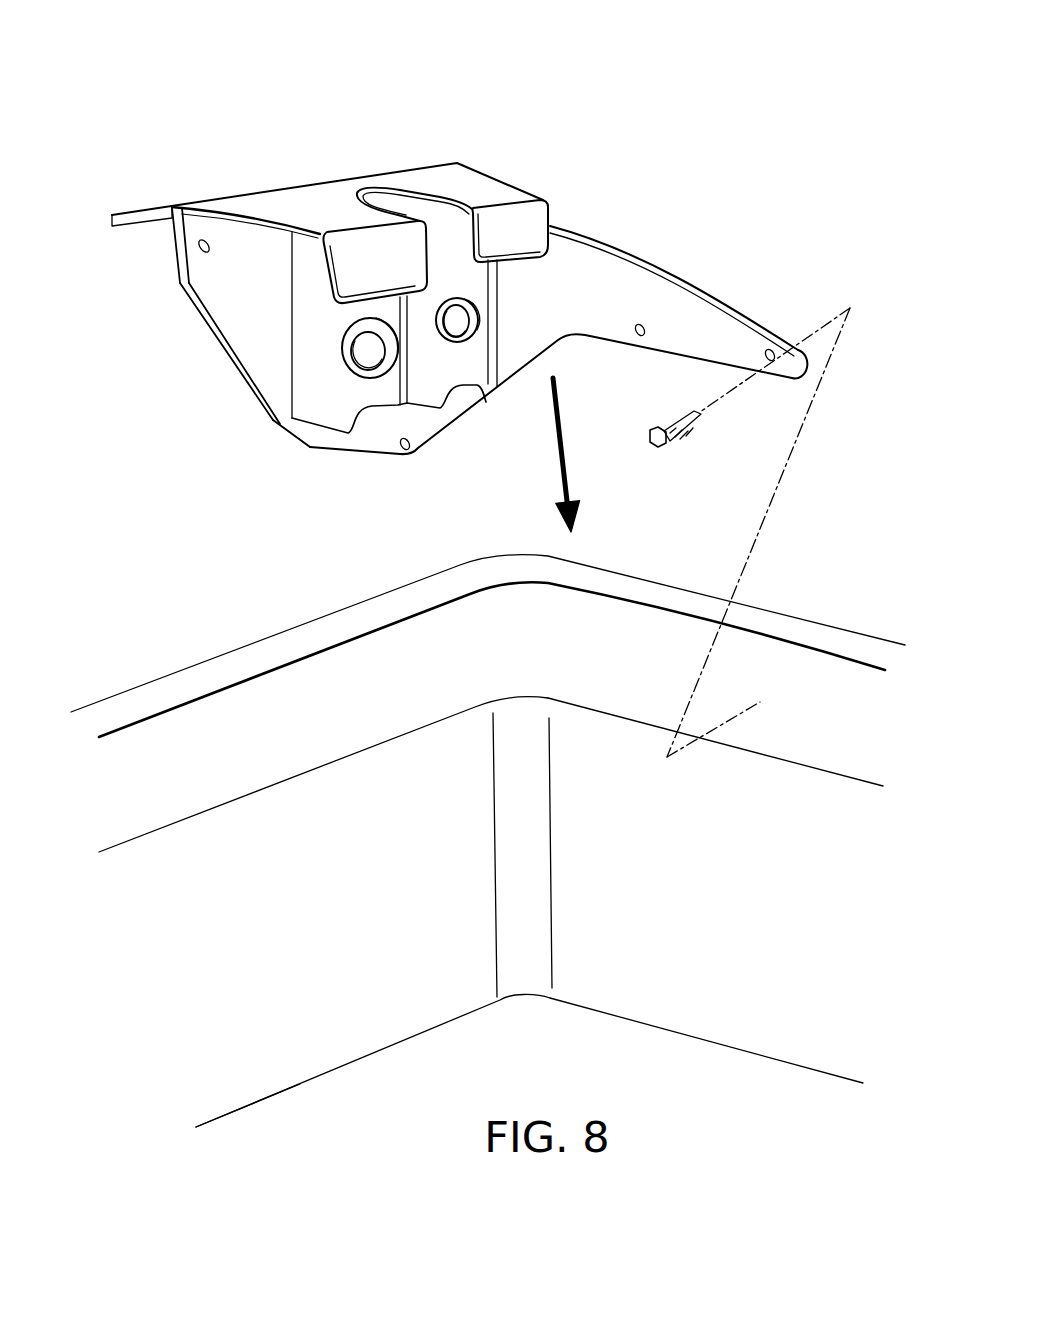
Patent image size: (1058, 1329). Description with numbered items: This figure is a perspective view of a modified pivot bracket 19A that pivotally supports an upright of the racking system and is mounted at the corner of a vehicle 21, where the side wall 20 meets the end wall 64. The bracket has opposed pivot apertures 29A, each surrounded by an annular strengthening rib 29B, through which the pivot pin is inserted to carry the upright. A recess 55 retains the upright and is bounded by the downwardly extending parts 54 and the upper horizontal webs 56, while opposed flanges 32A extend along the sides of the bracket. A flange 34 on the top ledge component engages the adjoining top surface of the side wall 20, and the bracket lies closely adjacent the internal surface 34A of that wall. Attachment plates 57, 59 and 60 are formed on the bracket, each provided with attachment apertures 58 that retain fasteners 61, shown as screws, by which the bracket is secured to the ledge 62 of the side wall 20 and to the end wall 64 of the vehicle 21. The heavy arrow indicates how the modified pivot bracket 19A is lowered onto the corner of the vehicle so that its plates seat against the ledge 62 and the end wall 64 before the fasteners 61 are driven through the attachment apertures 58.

The modified pivot bracket 19A is at (602, 152).
The side wall 20 is at (321, 942).
The vehicle 21 is at (188, 617).
The pivot apertures 29A is at (270, 420).
The annular strengthening ribs 29B is at (372, 348).
The opposed flanges 32A is at (263, 335).
The flange 34 is at (133, 210).
The internal surface 34A is at (293, 975).
The downwardly extending parts 54 is at (338, 277).
The recess 55 is at (398, 207).
The upper horizontal webs 56 is at (315, 210).
The attachment plate 57 is at (235, 257).
The attachment apertures 58 is at (198, 245).
The attachment plate 59 is at (465, 393).
The attachment plate 60 is at (687, 328).
The fasteners 61 is at (687, 432).
The ledge 62 is at (827, 712).
The end wall 64 is at (707, 942).